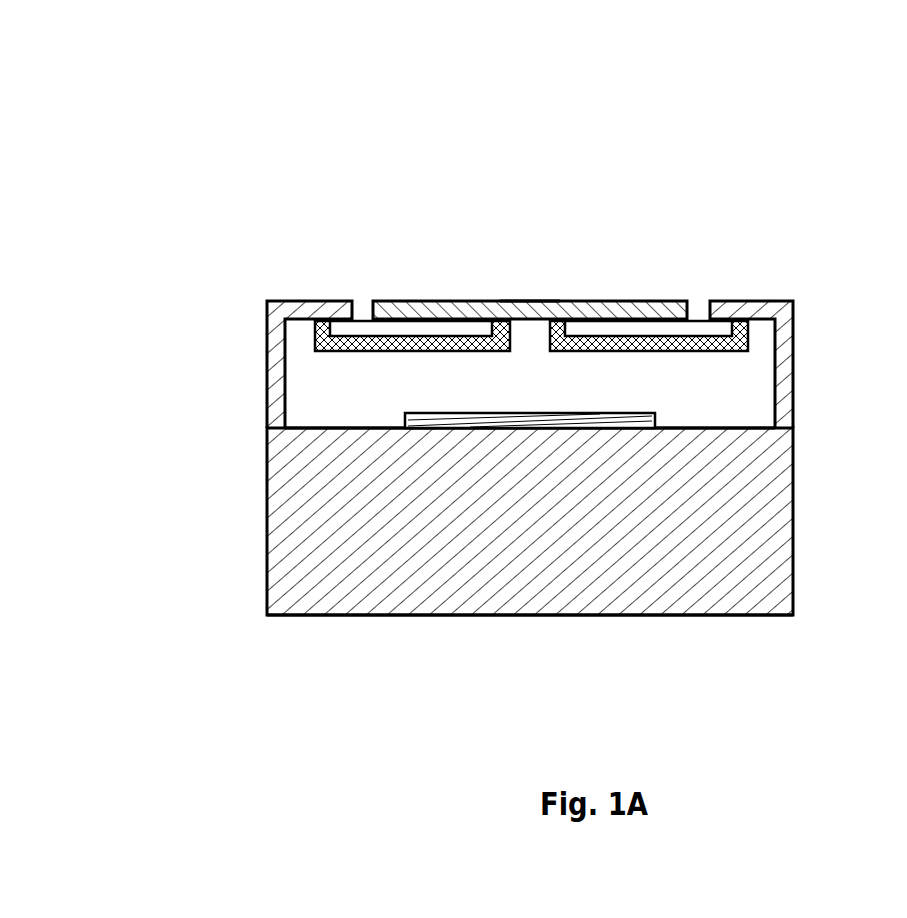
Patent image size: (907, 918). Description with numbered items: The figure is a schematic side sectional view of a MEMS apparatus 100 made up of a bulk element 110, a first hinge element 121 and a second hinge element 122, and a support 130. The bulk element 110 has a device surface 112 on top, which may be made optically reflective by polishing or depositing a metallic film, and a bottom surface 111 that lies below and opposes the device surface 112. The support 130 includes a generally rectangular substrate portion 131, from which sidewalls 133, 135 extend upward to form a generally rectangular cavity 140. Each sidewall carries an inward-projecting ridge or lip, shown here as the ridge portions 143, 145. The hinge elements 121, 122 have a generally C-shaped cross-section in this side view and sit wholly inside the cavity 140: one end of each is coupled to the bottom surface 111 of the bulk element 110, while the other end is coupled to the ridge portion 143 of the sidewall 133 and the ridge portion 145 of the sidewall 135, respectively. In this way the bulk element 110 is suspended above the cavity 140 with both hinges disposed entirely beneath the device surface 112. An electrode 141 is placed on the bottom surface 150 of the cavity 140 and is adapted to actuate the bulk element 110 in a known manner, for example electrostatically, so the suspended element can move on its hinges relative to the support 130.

The MEMS apparatus 100 is at (180, 143).
The bulk element 110 is at (459, 299).
The bottom surface 111 is at (542, 320).
The device surface 112 is at (530, 300).
The first hinge element 121 is at (333, 352).
The second hinge element 122 is at (685, 352).
The support 130 is at (460, 564).
The substrate portion 131 is at (495, 615).
The sidewall 133 is at (267, 337).
The sidewall 135 is at (793, 365).
The cavity 140 is at (523, 313).
The electrode 141 is at (527, 412).
The ridge portion 143 is at (300, 300).
The ridge portion 145 is at (728, 300).
The bottom surface of the cavity 150 is at (315, 427).